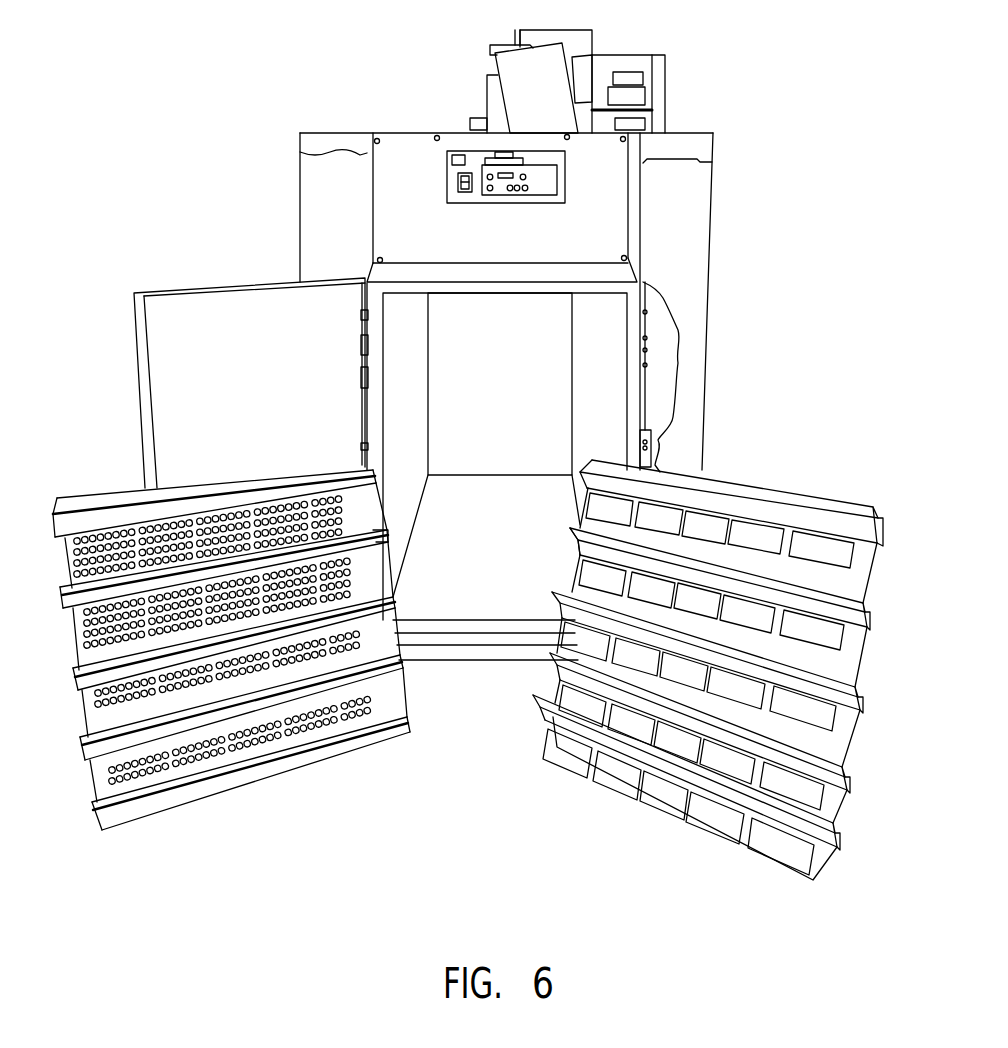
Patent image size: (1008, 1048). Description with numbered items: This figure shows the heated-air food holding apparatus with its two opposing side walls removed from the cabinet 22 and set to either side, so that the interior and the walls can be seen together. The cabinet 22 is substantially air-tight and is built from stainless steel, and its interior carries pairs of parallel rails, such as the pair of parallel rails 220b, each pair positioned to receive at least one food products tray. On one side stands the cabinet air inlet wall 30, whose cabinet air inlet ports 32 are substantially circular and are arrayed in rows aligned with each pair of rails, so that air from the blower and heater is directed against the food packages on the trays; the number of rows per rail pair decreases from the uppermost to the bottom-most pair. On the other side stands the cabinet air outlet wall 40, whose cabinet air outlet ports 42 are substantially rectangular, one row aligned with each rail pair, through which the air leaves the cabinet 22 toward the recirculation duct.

The cabinet 22 is at (518, 402).
The cabinet air inlet wall 30 is at (196, 484).
The cabinet air inlet ports 32 is at (183, 557).
The cabinet air outlet wall 40 is at (672, 467).
The cabinet air outlet ports 42 is at (757, 543).
The pair of parallel rails 220b is at (378, 531).